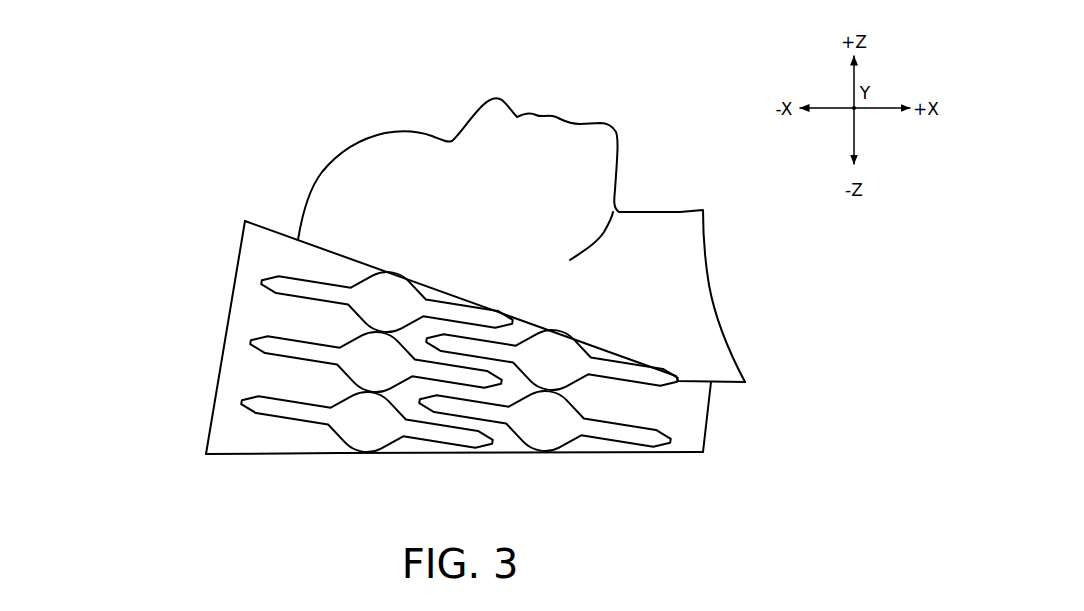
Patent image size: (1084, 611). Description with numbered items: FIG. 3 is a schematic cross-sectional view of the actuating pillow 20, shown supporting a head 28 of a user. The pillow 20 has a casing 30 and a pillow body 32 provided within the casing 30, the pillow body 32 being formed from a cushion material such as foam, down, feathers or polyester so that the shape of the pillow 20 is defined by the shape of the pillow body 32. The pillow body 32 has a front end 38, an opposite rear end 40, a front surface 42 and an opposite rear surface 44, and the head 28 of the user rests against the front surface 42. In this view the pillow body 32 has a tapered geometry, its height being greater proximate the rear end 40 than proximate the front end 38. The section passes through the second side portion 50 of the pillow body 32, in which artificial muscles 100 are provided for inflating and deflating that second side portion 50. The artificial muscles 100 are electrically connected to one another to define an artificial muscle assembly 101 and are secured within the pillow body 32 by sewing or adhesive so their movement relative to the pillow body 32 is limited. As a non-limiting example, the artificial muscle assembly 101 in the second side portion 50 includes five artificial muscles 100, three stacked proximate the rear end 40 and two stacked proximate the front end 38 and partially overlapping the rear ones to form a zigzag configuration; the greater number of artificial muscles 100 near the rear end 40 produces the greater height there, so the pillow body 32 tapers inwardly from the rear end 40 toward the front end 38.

The pillow 20 is at (414, 349).
The head 28 is at (407, 156).
The casing 30 is at (374, 270).
The pillow body 32 is at (462, 355).
The front end 38 is at (704, 448).
The rear end 40 is at (225, 341).
The front surface 42 is at (628, 356).
The rear surface 44 is at (230, 456).
The second side portion 50 is at (442, 457).
The artificial muscle 100 is at (461, 349).
The artificial muscle assembly 101 is at (461, 349).